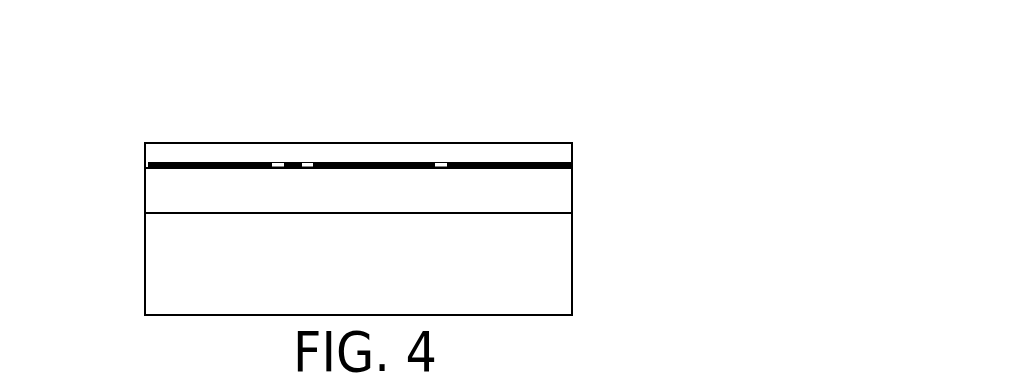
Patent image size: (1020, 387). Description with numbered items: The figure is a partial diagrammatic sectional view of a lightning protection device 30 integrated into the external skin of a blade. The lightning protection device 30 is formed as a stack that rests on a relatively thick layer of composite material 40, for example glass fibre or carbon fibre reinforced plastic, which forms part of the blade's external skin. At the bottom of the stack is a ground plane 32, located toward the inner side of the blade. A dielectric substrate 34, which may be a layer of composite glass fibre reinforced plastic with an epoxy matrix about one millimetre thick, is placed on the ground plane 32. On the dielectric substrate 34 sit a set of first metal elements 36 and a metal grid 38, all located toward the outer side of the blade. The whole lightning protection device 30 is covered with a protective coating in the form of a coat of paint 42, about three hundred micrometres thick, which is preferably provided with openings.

The lightning protection device 30 is at (574, 122).
The ground plane 32 is at (553, 217).
The dielectric substrate 34 is at (565, 193).
The first metal elements 36 is at (572, 163).
The metal grid 38 is at (292, 162).
The layer of composite material 40 is at (560, 305).
The coat of paint 42 is at (152, 153).